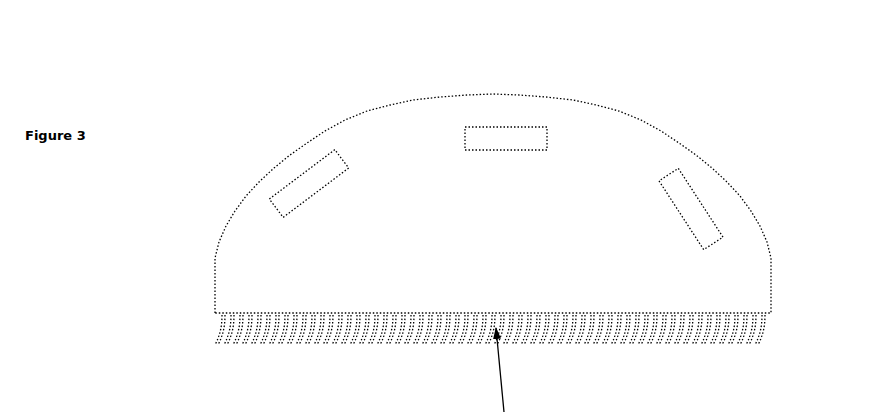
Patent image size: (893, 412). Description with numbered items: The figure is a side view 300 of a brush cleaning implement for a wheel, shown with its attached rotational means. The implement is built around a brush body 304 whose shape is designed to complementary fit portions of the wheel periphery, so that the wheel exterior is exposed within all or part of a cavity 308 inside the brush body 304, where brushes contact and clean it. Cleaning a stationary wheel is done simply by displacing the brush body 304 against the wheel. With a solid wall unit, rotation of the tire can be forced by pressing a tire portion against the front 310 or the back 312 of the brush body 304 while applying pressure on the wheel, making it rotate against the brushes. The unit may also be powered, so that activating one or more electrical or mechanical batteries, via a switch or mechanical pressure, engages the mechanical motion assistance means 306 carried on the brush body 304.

The side views 300 is at (480, 215).
The brush body 304 is at (625, 115).
The mechanical motion assistance means 306 is at (315, 182).
The cavity 308 is at (444, 249).
The front 310 is at (765, 232).
The back 312 is at (218, 218).